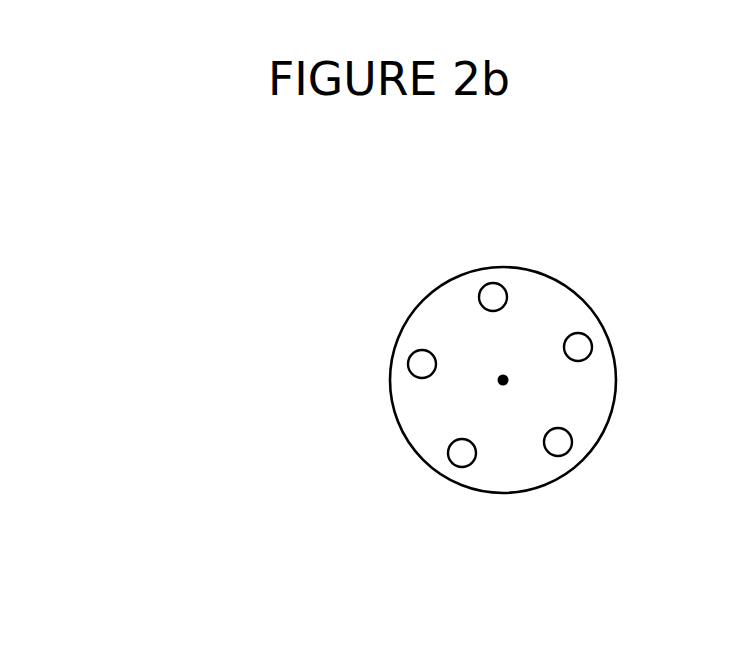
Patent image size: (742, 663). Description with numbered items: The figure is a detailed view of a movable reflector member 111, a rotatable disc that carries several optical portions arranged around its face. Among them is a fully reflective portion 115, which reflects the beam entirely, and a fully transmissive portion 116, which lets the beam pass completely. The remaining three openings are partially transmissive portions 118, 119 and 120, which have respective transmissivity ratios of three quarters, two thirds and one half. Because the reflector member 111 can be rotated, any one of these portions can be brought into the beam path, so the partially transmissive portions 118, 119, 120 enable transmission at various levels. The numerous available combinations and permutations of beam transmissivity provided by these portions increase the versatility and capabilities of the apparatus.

The movable reflector member 111 is at (352, 460).
The fully reflective portion 115 is at (592, 342).
The fully transmissive portion 116 is at (501, 284).
The partially transmissive portion 118 is at (566, 455).
The partially transmissive portion 119 is at (452, 464).
The partially transmissive portion 120 is at (424, 350).